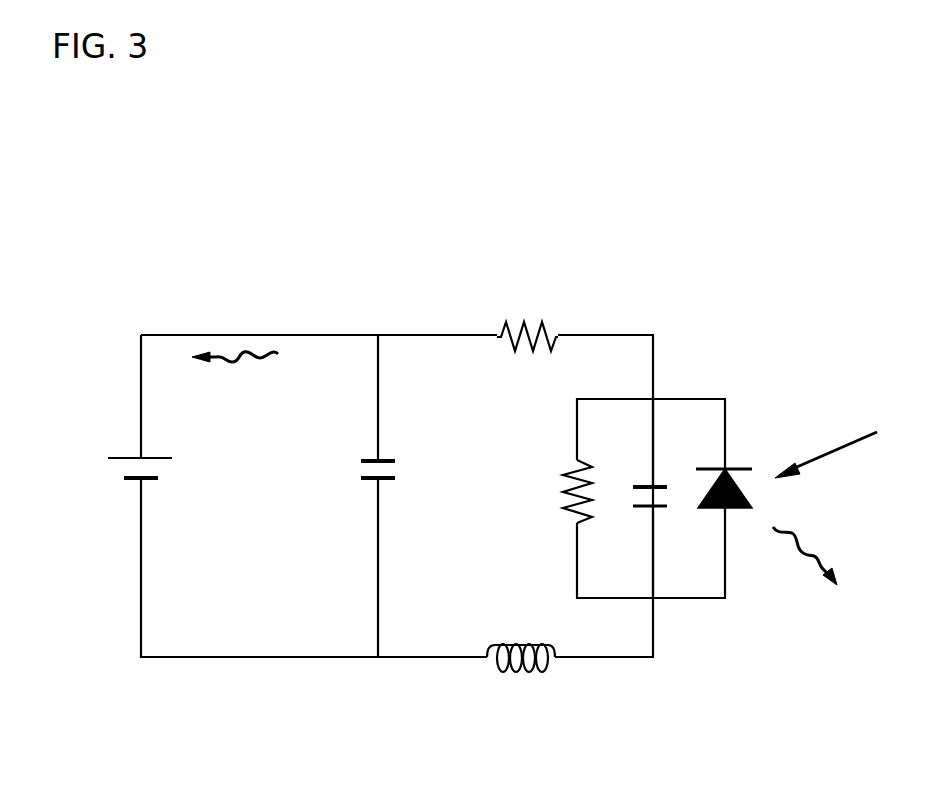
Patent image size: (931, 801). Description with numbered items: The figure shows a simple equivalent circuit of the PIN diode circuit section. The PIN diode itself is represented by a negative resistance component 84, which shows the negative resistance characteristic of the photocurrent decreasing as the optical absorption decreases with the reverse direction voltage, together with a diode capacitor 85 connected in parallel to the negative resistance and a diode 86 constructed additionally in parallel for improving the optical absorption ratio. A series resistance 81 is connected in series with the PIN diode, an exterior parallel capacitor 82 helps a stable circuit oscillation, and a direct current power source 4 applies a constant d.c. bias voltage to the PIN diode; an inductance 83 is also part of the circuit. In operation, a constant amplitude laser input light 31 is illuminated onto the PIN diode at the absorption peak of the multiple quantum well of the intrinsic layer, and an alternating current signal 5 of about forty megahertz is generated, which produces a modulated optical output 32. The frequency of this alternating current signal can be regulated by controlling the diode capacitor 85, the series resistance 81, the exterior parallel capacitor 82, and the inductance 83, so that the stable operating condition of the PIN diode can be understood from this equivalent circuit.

The direct current power source 4 is at (120, 482).
The alternating current signal 5 is at (245, 355).
The laser input light 31 is at (826, 453).
The emitted light 32 is at (795, 532).
The series resistance 81 is at (549, 333).
The exterior parallel capacitor 82 is at (359, 470).
The inductance 83 is at (524, 673).
The negative resistance component 84 is at (568, 492).
The diode capacitor 85 is at (643, 486).
The diode 86 is at (709, 510).